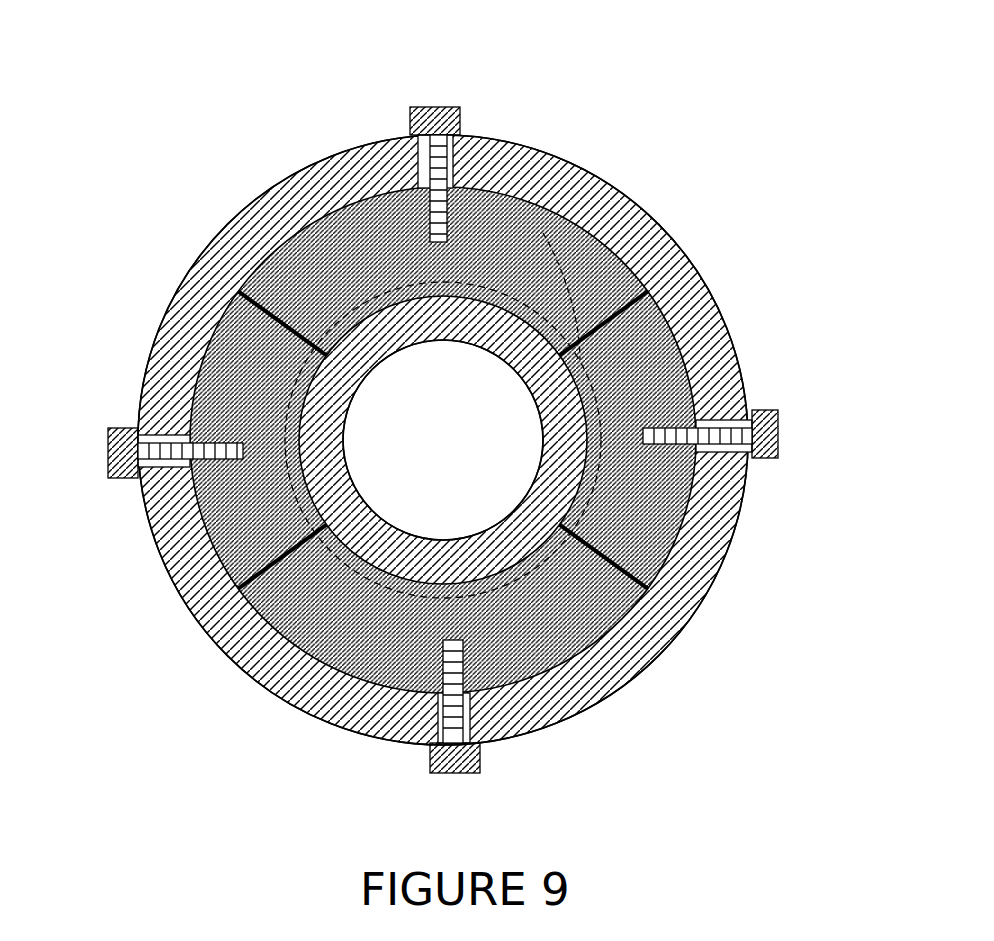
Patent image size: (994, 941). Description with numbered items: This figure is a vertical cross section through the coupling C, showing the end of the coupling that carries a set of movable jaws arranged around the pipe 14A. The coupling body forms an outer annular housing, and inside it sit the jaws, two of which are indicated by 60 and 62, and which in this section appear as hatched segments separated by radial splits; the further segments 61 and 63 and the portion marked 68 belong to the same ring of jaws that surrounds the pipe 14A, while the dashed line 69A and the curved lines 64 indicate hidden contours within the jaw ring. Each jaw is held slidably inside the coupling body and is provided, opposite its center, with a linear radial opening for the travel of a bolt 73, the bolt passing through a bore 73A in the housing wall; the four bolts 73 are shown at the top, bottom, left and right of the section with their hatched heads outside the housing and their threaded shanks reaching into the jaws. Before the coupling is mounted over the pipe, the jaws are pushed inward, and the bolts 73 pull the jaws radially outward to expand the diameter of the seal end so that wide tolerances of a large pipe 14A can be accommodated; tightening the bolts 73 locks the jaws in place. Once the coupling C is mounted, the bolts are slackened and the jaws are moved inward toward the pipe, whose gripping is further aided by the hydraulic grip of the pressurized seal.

The jaw 60 is at (567, 212).
The coupling C is at (557, 185).
The pipe 14A is at (365, 367).
The right clamp segment 61 is at (643, 525).
The jaw 62 is at (373, 630).
The left clamp segment 63 is at (197, 487).
The top clamp segment 68 is at (427, 207).
The hidden groove line 69A is at (570, 257).
The segment split lines 64 is at (285, 340).
The threaded bore 73A is at (457, 183).
The bolt 73 is at (437, 107).